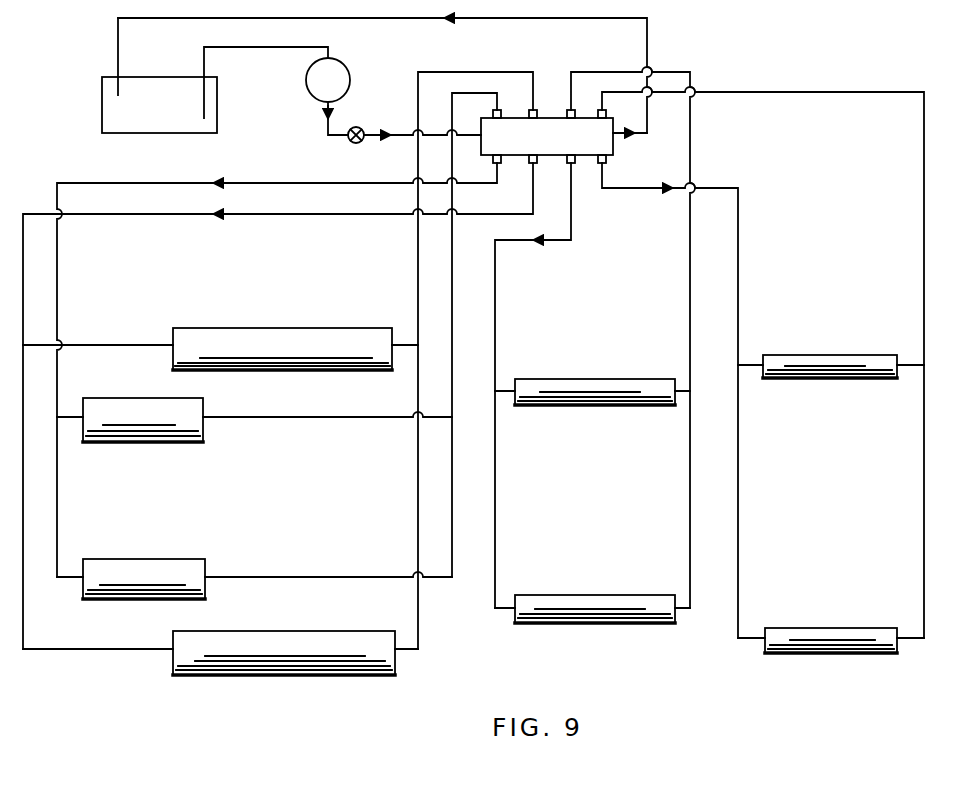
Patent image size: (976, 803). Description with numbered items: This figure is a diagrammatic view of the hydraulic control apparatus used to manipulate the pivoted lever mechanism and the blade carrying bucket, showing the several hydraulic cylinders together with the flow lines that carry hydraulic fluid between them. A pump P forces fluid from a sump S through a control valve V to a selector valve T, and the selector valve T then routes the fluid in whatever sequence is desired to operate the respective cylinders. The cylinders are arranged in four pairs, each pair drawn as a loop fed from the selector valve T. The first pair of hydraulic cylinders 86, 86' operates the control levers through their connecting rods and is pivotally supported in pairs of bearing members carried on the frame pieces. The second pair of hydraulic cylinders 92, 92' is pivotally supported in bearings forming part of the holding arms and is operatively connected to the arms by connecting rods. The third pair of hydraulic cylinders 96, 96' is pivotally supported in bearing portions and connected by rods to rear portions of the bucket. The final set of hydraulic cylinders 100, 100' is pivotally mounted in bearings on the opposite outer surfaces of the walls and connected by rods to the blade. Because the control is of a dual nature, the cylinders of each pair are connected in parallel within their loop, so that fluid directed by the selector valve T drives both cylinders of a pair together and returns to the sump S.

The sump S is at (190, 104).
The pump P is at (328, 80).
The control valve V is at (358, 128).
The selector valve T is at (613, 144).
The hydraulic cylinder 92' is at (220, 337).
The hydraulic cylinder 86' is at (254, 432).
The hydraulic cylinder 86 is at (254, 566).
The hydraulic cylinder 92 is at (220, 641).
The hydraulic cylinder 96' is at (592, 378).
The hydraulic cylinder 96 is at (592, 596).
The hydraulic cylinder 100' is at (831, 351).
The hydraulic cylinder 100 is at (831, 627).